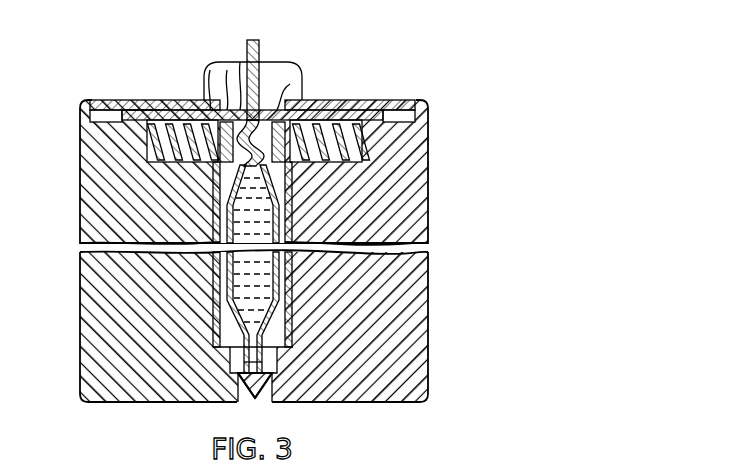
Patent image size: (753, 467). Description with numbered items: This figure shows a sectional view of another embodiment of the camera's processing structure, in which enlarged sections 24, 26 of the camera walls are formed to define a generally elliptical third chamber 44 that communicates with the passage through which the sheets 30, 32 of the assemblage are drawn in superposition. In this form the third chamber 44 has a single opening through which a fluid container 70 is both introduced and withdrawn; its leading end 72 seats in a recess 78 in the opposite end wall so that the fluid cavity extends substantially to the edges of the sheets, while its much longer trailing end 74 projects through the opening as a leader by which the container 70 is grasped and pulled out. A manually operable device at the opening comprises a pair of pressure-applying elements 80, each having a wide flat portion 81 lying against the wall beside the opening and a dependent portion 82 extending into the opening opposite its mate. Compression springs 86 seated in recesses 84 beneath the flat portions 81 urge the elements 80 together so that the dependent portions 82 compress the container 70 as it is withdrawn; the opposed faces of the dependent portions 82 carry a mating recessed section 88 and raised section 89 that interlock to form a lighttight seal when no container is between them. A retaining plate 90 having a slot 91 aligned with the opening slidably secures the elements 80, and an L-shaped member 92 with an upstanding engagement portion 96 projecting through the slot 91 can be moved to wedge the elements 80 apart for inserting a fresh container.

The enlarged section 24 is at (438, 186).
The enlarged section 26 is at (70, 188).
The sheet 30 is at (216, 283).
The sheet 32 is at (290, 283).
The third chamber 44 is at (235, 335).
The container 70 is at (288, 320).
The leading end 72 is at (237, 401).
The trailing end 74 is at (258, 40).
The recess 78 is at (274, 401).
The pressure-applying element 80 is at (150, 104).
The flat portion 81 is at (188, 110).
The dependent portion 82 is at (213, 197).
The recess 84 is at (175, 163).
The compression spring 86 is at (148, 150).
The recessed section 88 is at (227, 70).
The raised section 89 is at (290, 84).
The retaining plate 90 is at (136, 108).
The slot 91 is at (210, 70).
The L-shaped member 92 is at (296, 52).
The engagement portion 96 is at (240, 62).